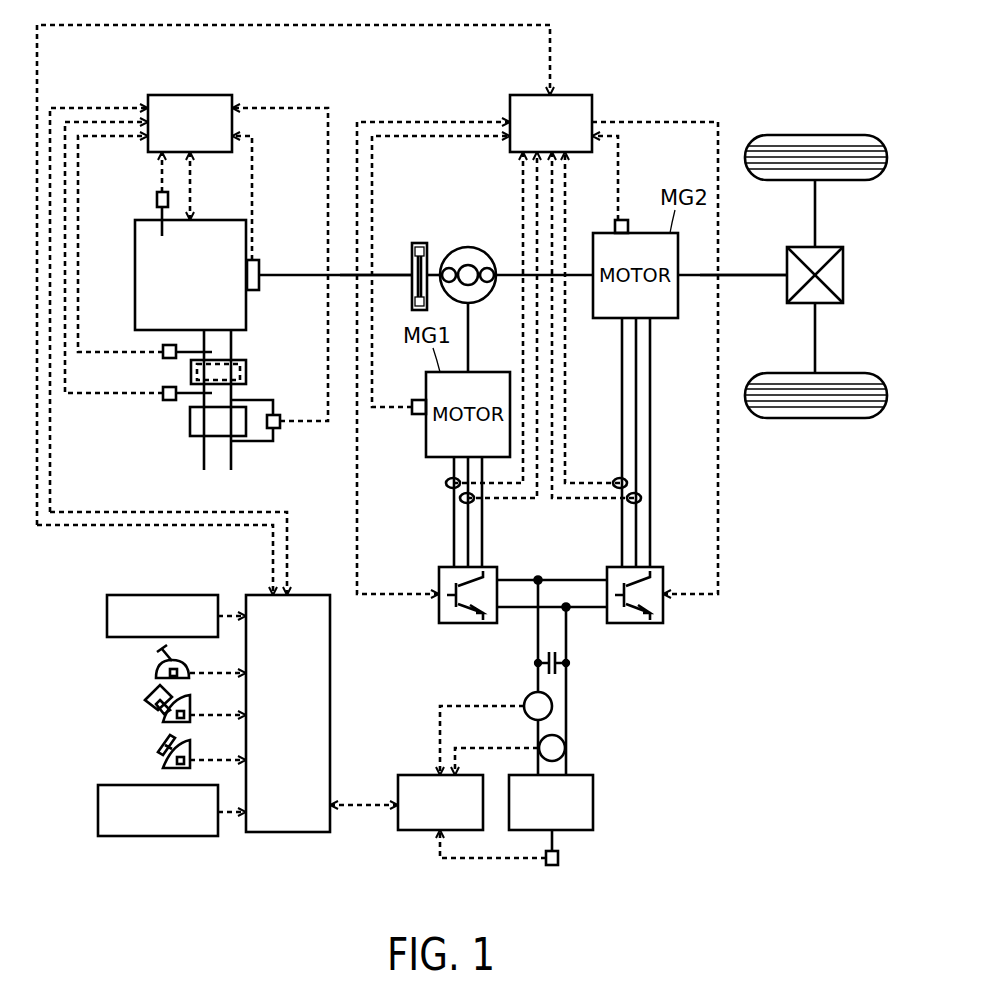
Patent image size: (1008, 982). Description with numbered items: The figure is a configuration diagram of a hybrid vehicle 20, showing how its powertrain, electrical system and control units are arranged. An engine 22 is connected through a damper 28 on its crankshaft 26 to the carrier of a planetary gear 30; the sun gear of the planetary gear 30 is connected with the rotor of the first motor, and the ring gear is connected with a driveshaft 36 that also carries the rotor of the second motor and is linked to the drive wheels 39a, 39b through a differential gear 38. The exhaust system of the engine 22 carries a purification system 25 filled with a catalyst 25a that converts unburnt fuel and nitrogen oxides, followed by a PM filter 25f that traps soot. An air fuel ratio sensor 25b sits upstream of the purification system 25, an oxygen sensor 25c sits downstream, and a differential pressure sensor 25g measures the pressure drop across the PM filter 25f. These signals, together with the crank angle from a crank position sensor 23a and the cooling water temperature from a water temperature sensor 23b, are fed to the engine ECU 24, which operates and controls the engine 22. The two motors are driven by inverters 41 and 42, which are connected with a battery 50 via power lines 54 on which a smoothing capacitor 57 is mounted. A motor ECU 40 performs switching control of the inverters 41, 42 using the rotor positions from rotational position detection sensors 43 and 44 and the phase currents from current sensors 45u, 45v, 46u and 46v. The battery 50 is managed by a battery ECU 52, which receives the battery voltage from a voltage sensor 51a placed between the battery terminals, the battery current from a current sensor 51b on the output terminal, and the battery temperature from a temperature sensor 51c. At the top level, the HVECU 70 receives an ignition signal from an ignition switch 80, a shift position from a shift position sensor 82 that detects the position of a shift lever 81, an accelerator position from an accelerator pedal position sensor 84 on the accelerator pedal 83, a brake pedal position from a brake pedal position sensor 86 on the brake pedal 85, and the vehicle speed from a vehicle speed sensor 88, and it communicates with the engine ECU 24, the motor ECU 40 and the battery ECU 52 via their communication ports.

The hybrid vehicle 20 is at (662, 66).
The engine 22 is at (210, 220).
The crank position sensor 23a is at (260, 262).
The water temperature sensor 23b is at (157, 199).
The engine ECU 24 is at (205, 95).
The purification system 25 is at (247, 372).
The catalyst 25a is at (244, 380).
The air fuel ratio sensor 25b is at (163, 350).
The oxygen sensor 25c is at (163, 392).
The PM filter 25f is at (190, 421).
The differential pressure sensor 25g is at (278, 428).
The crankshaft 26 is at (392, 272).
The damper 28 is at (420, 243).
The planetary gear 30 is at (468, 247).
The driveshaft 36 is at (758, 273).
The differential gear 38 is at (829, 247).
The drive wheel 39a is at (815, 135).
The drive wheel 39b is at (815, 418).
The motor ECU 40 is at (572, 95).
The inverter 41 is at (490, 567).
The inverter 42 is at (655, 567).
The rotational position detection sensor 43 is at (418, 414).
The rotational position detection sensor 44 is at (625, 220).
The current sensor 45u is at (446, 483).
The current sensor 45v is at (460, 498).
The current sensor 46u is at (627, 483).
The current sensor 46v is at (641, 498).
The battery 50 is at (595, 802).
The voltage sensor 51a is at (566, 748).
The current sensor 51b is at (553, 703).
The temperature sensor 51c is at (560, 858).
The battery ECU 52 is at (420, 775).
The power lines 54 is at (566, 641).
The capacitor 57 is at (560, 660).
The HVECU 70 is at (305, 595).
The ignition switch 80 is at (107, 616).
The shift lever 81 is at (156, 658).
The shift position sensor 82 is at (165, 673).
The accelerator pedal 83 is at (150, 696).
The accelerator pedal position sensor 84 is at (175, 715).
The brake pedal 85 is at (157, 740).
The brake pedal position sensor 86 is at (170, 760).
The vehicle speed sensor 88 is at (98, 812).